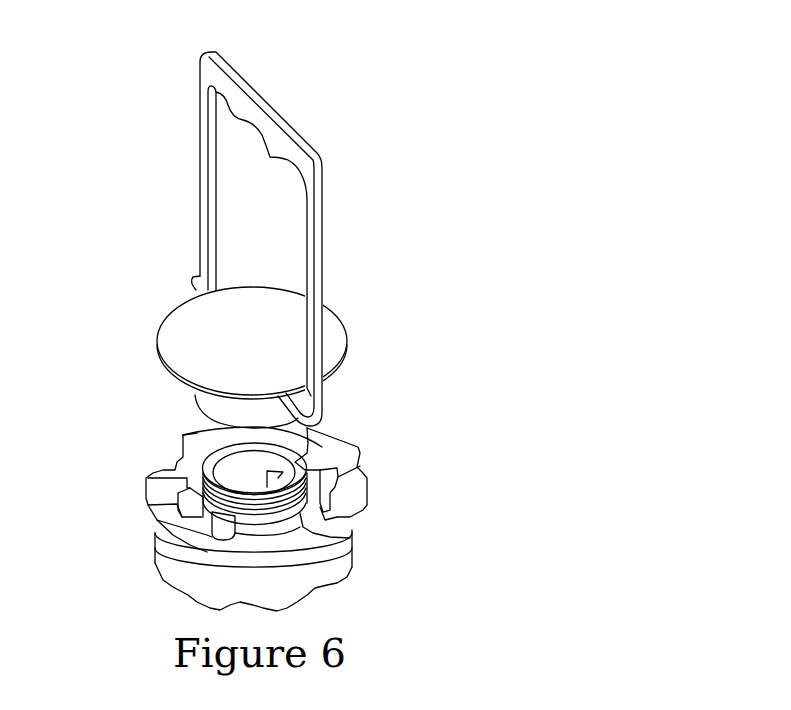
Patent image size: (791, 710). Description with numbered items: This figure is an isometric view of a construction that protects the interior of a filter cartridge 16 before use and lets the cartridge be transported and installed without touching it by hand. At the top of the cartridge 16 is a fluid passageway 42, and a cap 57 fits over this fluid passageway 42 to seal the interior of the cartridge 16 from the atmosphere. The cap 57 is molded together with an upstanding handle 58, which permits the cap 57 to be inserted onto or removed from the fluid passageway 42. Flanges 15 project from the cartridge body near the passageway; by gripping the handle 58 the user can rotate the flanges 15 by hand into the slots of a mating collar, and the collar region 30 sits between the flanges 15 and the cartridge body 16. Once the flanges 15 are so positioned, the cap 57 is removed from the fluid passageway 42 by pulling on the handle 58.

The flanges 15 is at (357, 495).
The filter cartridge 16 is at (320, 580).
The collar 30 is at (323, 446).
The fluid passageway 42 is at (205, 460).
The cap 57 is at (267, 322).
The handle 58 is at (252, 100).